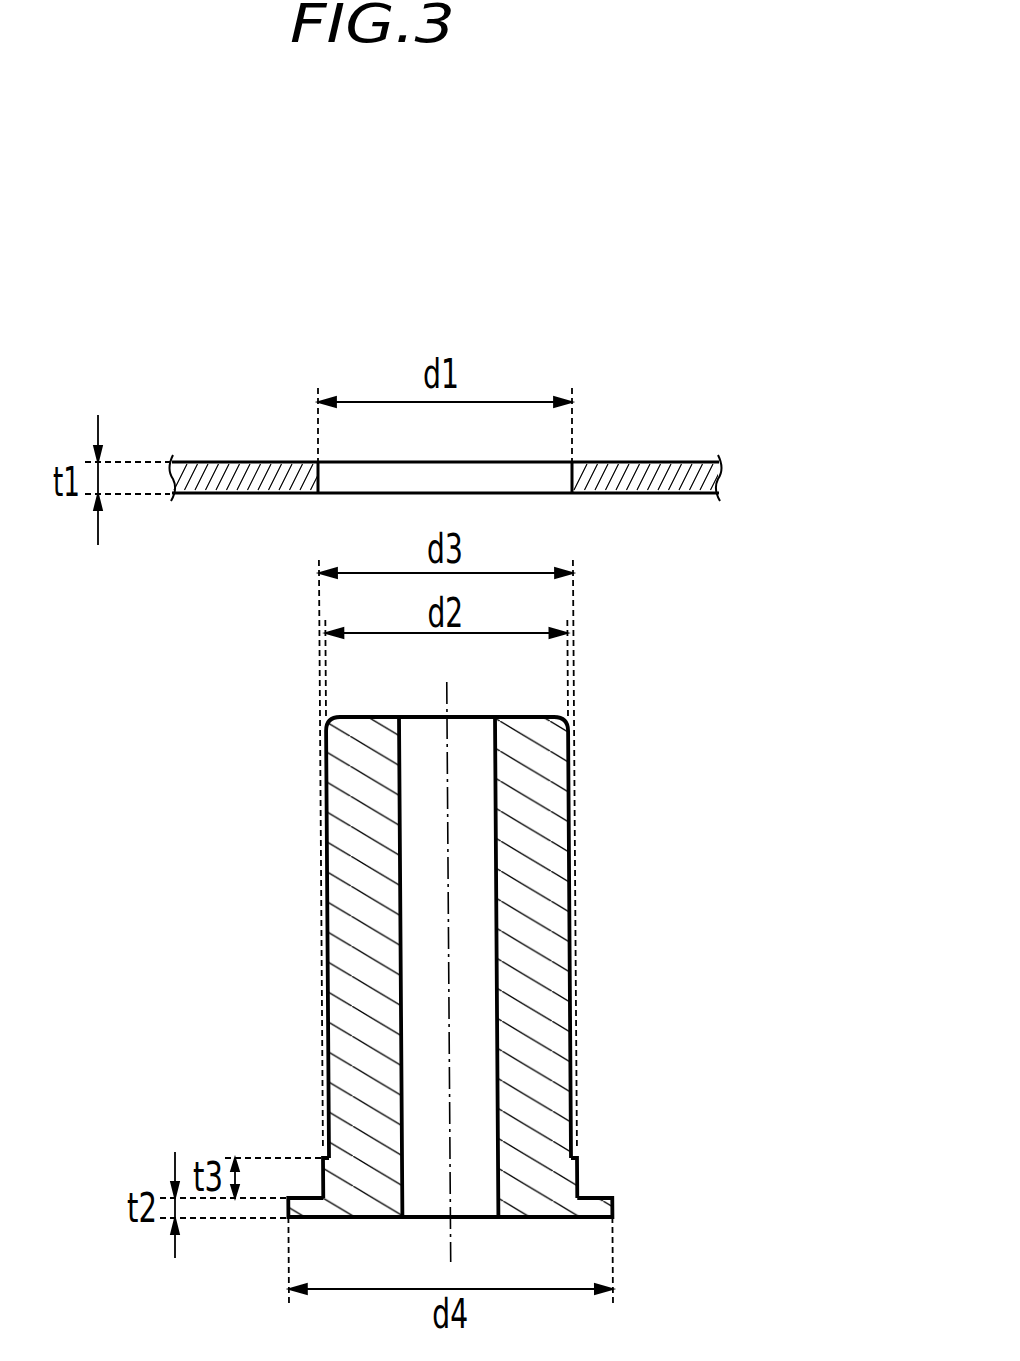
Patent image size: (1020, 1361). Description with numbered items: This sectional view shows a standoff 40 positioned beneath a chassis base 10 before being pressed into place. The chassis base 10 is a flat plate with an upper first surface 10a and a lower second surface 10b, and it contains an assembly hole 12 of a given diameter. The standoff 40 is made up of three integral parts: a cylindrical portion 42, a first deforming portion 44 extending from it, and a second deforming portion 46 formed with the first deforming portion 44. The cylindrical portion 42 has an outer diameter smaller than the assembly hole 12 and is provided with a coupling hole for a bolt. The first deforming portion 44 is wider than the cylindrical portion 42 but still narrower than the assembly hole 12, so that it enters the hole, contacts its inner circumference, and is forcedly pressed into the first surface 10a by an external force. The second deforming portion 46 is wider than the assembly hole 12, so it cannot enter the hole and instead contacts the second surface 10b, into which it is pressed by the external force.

The chassis base 10 is at (540, 523).
The first surface 10a is at (667, 461).
The second surface 10b is at (667, 494).
The assembly hole 12 is at (503, 477).
The standoff 40 is at (532, 967).
The cylindrical portion 42 is at (547, 995).
The first deforming portion 44 is at (575, 1168).
The second deforming portion 46 is at (495, 1180).